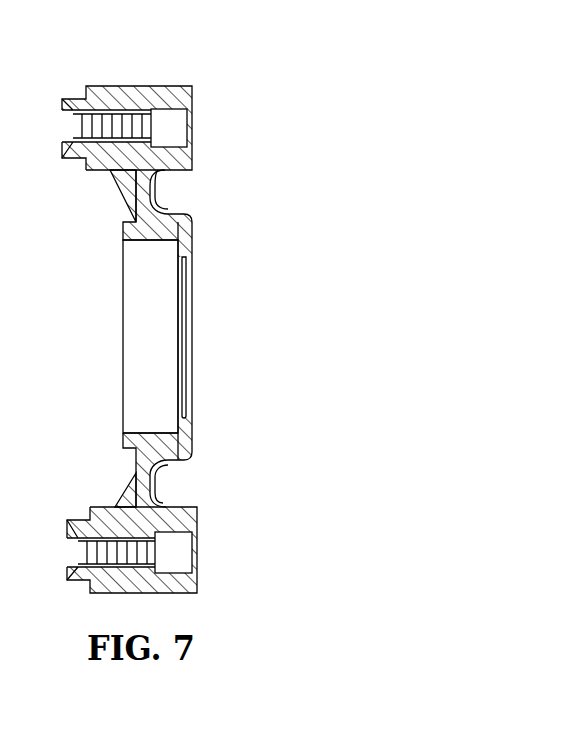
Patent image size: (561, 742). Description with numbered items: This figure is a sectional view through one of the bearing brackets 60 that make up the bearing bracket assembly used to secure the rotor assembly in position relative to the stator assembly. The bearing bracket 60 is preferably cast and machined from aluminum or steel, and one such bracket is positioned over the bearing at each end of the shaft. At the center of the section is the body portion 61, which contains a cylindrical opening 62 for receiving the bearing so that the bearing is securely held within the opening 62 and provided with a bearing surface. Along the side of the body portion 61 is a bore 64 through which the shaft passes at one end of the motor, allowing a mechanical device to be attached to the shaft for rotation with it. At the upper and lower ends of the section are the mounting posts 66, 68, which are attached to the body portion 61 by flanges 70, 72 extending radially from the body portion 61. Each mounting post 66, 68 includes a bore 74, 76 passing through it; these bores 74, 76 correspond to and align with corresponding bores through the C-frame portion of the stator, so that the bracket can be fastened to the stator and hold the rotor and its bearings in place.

The bearing bracket 60 is at (144, 56).
The mounting post 66 is at (192, 86).
The bore 74 is at (188, 128).
The flange 70 is at (133, 213).
The body portion 61 is at (193, 222).
The cylindrical opening 62 is at (128, 362).
The bore 64 is at (193, 372).
The flange 72 is at (137, 463).
The mounting post 68 is at (197, 517).
The bore 76 is at (195, 550).